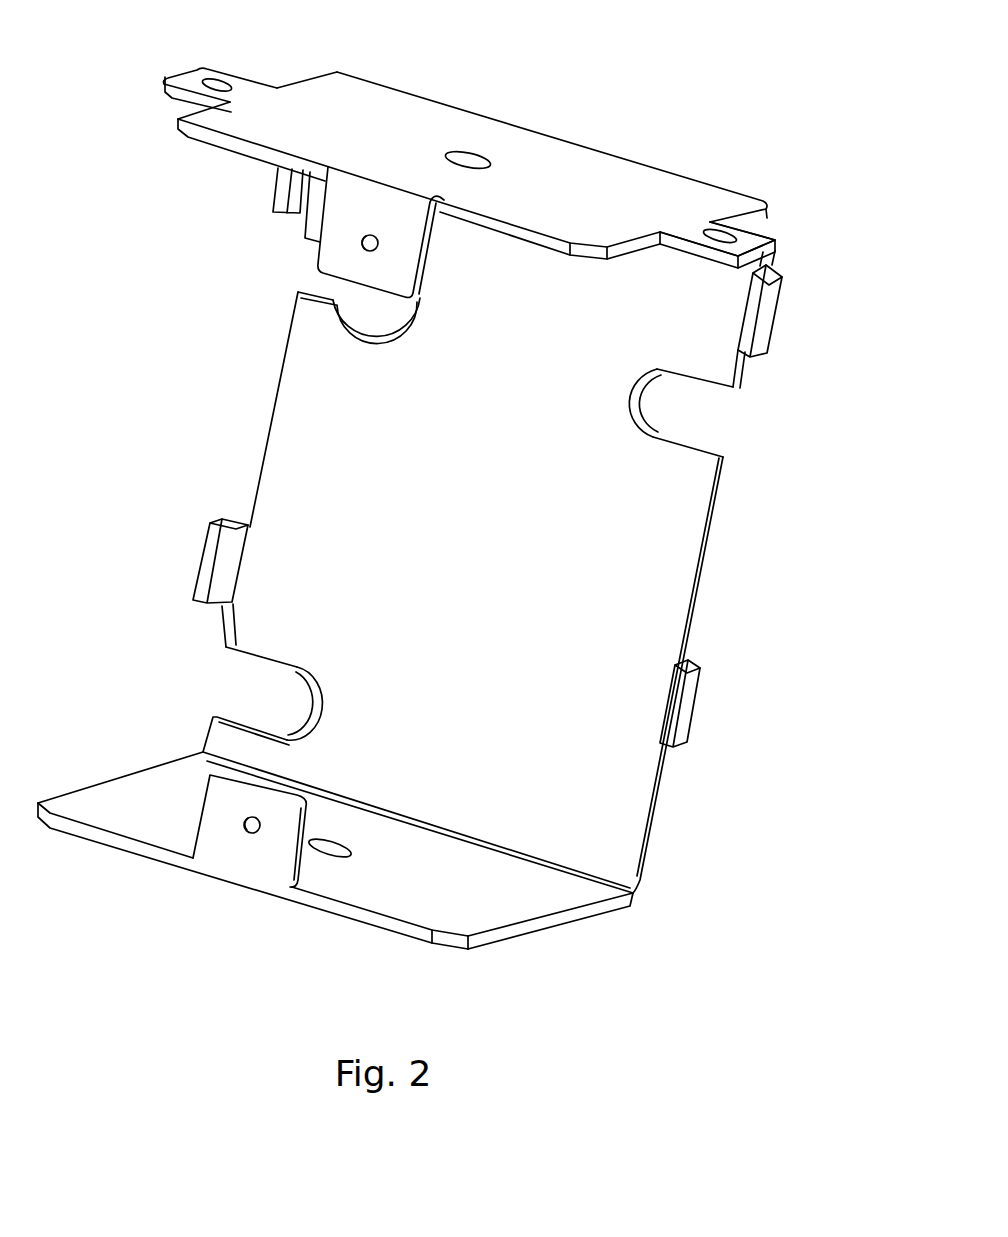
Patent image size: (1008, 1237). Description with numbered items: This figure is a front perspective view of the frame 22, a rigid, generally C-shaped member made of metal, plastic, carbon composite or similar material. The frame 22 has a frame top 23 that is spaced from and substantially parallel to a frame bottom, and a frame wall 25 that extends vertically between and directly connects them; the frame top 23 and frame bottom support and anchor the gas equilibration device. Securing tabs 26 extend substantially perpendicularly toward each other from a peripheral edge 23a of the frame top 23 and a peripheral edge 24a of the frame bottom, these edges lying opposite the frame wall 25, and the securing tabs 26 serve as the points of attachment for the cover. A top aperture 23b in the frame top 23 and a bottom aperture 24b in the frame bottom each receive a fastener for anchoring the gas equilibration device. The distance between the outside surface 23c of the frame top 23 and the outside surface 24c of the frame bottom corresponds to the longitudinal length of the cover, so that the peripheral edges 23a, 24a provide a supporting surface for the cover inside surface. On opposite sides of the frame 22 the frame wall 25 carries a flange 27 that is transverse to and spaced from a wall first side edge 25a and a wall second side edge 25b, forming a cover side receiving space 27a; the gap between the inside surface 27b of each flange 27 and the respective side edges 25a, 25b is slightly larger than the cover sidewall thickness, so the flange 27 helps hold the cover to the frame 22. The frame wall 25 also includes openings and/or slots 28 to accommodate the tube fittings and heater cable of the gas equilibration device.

The frame 22 is at (280, 88).
The frame top 23 is at (410, 90).
The peripheral edge 23a is at (248, 152).
The top aperture 23b is at (466, 156).
The outside surface 23c is at (567, 173).
The peripheral edge 24a is at (362, 917).
The bottom aperture 24b is at (335, 848).
The outside surface 24c is at (525, 935).
The frame wall 25 is at (486, 592).
The wall first side edge 25a is at (277, 380).
The wall second side edge 25b is at (707, 548).
The securing tabs 26 is at (395, 250).
The flange 27 is at (200, 562).
The cover side receiving space 27a is at (222, 610).
The inside surface 27b is at (290, 205).
The openings and/or slots 28 is at (645, 398).